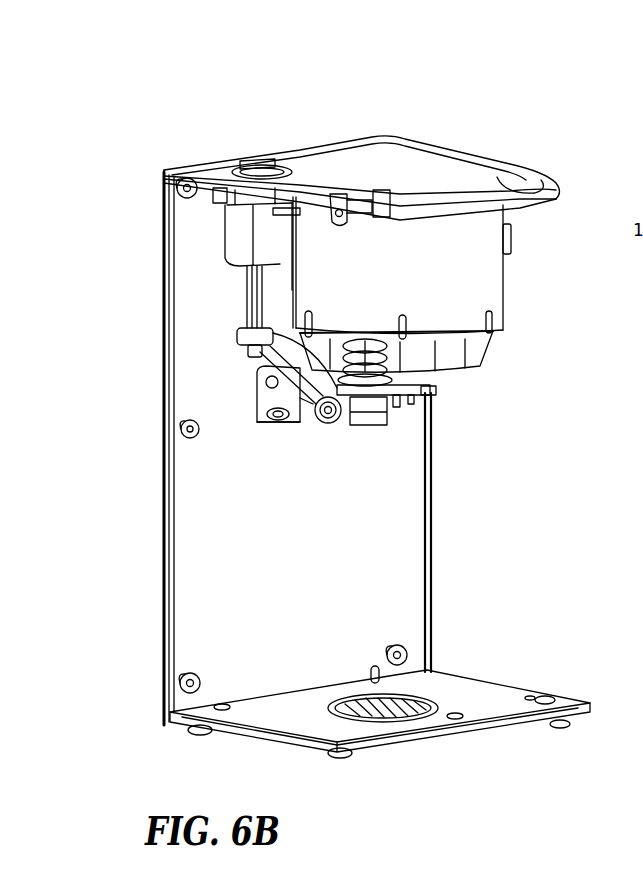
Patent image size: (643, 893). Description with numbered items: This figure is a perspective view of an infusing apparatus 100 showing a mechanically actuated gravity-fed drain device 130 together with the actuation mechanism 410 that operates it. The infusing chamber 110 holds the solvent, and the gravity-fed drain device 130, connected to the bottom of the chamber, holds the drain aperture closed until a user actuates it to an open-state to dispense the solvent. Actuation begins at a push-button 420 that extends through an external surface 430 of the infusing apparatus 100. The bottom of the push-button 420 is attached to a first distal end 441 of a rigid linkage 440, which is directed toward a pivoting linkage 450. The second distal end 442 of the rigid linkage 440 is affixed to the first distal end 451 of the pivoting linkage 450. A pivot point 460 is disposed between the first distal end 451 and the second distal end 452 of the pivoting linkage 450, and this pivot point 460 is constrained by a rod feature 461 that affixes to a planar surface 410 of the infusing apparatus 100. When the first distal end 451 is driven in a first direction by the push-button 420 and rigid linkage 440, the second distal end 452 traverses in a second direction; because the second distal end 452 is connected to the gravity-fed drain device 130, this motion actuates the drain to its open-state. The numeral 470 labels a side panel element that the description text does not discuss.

The infusing apparatus 100 is at (474, 503).
The infusing chamber 110 is at (480, 278).
The gravity-fed drain device 130 is at (382, 420).
The actuation mechanism 410 is at (290, 455).
The push-button 420 is at (247, 163).
The external surface 430 is at (217, 170).
The rigid linkage 440 is at (247, 303).
The first distal end 441 is at (233, 277).
The second distal end 442 is at (229, 349).
The pivoting linkage 450 is at (300, 403).
The first distal end 451 is at (260, 367).
The second distal end 452 is at (350, 413).
The pivot point 460 is at (315, 421).
The rod feature 461 is at (300, 398).
The side panel 470 is at (203, 610).